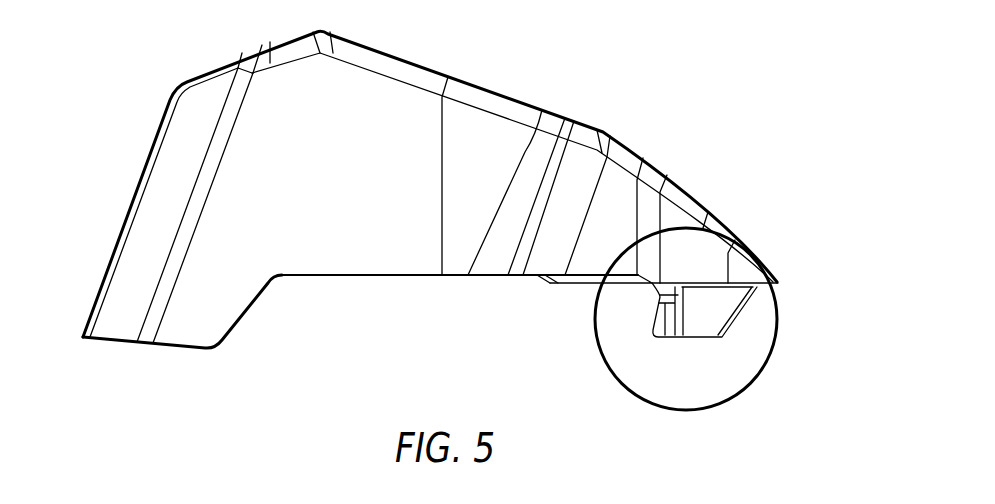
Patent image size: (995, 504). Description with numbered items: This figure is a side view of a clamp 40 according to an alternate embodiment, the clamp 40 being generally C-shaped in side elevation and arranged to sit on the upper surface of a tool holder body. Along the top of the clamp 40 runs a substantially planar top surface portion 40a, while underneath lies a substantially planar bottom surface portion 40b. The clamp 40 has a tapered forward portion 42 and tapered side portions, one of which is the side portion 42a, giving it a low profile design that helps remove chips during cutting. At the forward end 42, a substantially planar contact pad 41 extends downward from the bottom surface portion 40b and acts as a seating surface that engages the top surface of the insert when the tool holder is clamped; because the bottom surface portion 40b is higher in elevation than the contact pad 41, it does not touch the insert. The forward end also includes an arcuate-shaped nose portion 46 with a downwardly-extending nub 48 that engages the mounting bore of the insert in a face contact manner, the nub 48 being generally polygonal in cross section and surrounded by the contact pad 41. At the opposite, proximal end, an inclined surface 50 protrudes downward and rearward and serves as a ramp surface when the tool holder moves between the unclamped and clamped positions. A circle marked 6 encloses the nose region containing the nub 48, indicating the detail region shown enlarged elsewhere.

The clamp 40 is at (106, 101).
The top surface portion 40a is at (510, 96).
The bottom surface portion 40b is at (414, 284).
The contact pad 41 is at (570, 288).
The forward portion 42 is at (484, 76).
The tapered side portion 42a is at (619, 206).
The arcuate-shaped nose portion 46 is at (769, 236).
The nub 48 is at (753, 328).
The inclined surface 50 is at (244, 314).
The detail circle 6 is at (710, 232).